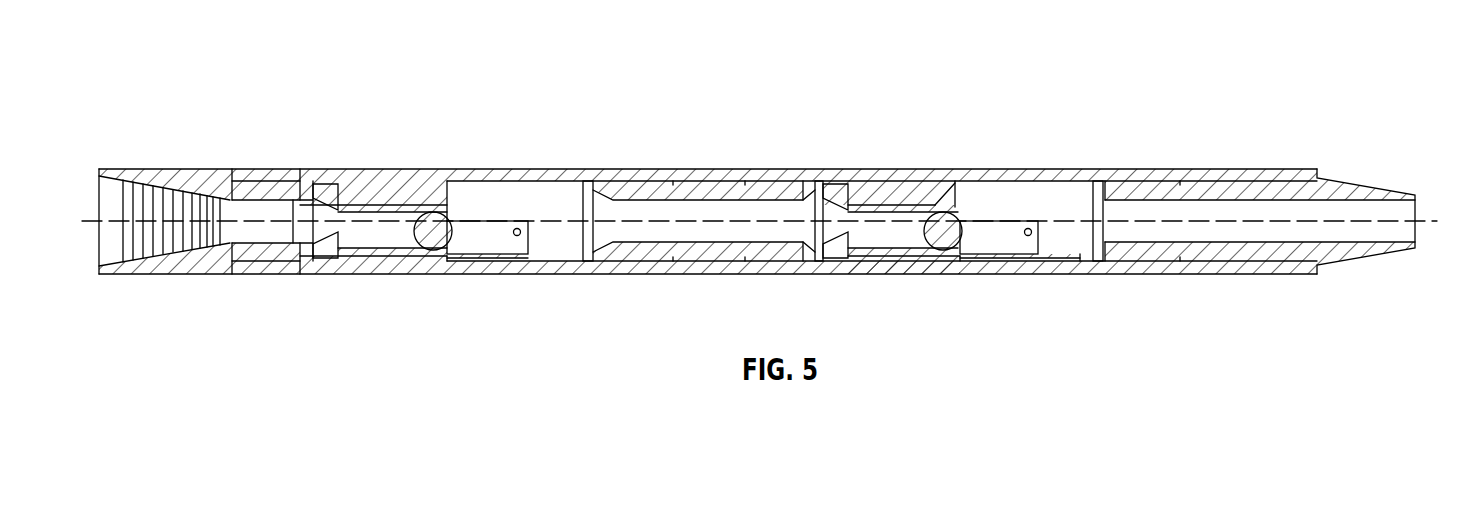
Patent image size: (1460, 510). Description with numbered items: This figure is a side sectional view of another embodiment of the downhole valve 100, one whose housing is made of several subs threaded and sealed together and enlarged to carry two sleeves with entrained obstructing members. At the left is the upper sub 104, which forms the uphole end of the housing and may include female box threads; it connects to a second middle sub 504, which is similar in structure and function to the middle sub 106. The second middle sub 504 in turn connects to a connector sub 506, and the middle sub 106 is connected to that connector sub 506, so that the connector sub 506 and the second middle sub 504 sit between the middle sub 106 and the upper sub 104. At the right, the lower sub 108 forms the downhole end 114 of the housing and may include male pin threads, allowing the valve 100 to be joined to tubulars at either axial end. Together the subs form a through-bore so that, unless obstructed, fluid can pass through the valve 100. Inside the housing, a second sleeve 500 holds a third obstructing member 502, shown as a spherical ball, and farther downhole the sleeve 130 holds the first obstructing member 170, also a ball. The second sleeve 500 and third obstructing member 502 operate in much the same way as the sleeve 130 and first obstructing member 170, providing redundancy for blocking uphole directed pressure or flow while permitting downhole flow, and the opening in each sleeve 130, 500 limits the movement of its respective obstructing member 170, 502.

The valve 100 is at (168, 70).
The upper sub 104 is at (176, 168).
The middle sub 106 is at (1002, 169).
The lower sub 108 is at (1236, 169).
The downhole end 114 is at (1416, 196).
The sleeve 130 is at (889, 258).
The first obstructing member 170 is at (953, 224).
The second sleeve 500 is at (390, 262).
The third obstructing member 502 is at (428, 206).
The second middle sub 504 is at (365, 188).
The connector sub 506 is at (715, 181).